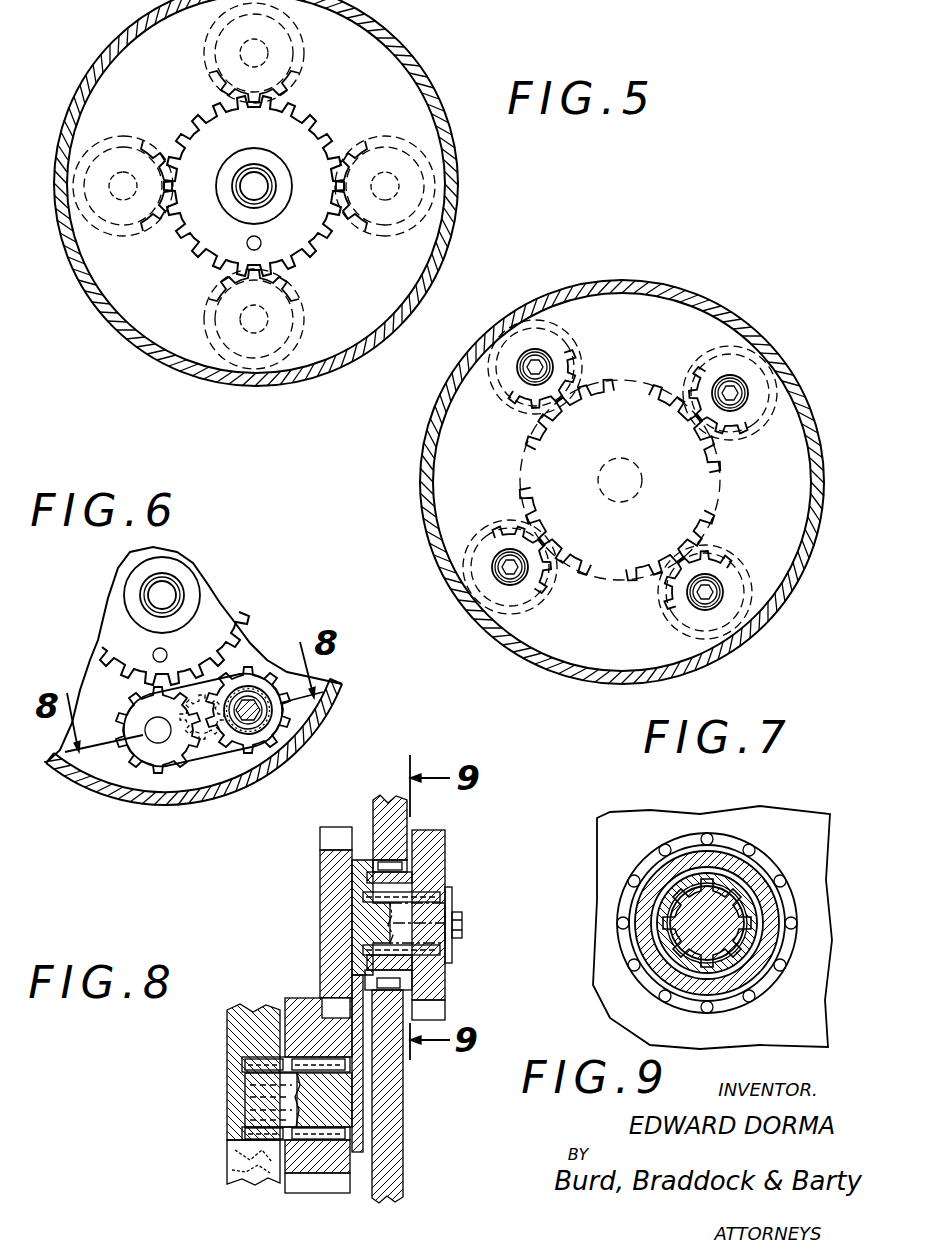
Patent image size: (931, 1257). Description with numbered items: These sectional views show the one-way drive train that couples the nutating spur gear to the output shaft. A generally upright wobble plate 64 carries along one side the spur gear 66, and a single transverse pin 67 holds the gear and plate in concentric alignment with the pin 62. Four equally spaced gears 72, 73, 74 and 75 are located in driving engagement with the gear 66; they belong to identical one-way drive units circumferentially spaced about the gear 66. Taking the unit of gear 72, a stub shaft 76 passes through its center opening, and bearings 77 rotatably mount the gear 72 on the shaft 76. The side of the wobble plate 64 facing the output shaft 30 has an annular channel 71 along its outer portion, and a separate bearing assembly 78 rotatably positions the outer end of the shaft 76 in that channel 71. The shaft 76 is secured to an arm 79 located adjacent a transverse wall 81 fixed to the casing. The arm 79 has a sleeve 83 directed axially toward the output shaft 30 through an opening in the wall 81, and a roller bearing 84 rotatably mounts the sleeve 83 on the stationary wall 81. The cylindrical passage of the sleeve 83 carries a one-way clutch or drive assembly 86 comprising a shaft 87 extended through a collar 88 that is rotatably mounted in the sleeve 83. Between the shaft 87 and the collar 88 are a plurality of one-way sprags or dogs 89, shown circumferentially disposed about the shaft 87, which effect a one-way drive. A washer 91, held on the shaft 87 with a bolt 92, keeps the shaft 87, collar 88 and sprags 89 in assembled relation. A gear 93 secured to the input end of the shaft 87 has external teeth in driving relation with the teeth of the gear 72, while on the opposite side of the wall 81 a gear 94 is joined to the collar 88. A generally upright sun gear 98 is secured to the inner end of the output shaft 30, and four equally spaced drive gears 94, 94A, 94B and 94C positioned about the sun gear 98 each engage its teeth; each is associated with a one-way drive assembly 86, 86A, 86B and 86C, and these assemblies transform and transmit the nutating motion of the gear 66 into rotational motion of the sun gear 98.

In FIG. 7, the output shaft 30 is at (640, 476).
In FIG. 5, the pin 62 is at (253, 188).
In FIG. 6, the pin 62 is at (170, 598).
In FIG. 8, the wobble plate 64 is at (230, 1160).
In FIG. 5, the spur gear 66 is at (222, 245).
In FIG. 6, the spur gear 66 is at (216, 612).
In FIG. 5, the transverse pin 67 is at (262, 240).
In FIG. 8, the annular channel 71 is at (242, 1113).
In FIG. 5, the gear 72 is at (282, 318).
In FIG. 6, the gear 72 is at (136, 764).
In FIG. 8, the gear 72 is at (307, 1027).
In FIG. 5, the gear 73 is at (398, 160).
In FIG. 5, the gear 74 is at (288, 53).
In FIG. 5, the gear 75 is at (118, 155).
In FIG. 6, the stub shaft 76 is at (135, 722).
In FIG. 8, the stub shaft 76 is at (262, 1093).
In FIG. 8, the bearings 77 is at (320, 1135).
In FIG. 8, the bearing assembly 78 is at (262, 1062).
In FIG. 6, the arm 79 is at (215, 770).
In FIG. 8, the arm 79 is at (360, 1040).
In FIG. 8, the transverse wall 81 is at (394, 1170).
In FIG. 9, the transverse wall 81 is at (790, 840).
In FIG. 6, the sleeve 83 is at (262, 700).
In FIG. 8, the sleeve 83 is at (370, 860).
In FIG. 9, the sleeve 83 is at (660, 866).
In FIG. 8, the bearing 84 is at (394, 862).
In FIG. 9, the bearing 84 is at (750, 850).
In FIG. 7, the one-way clutch or drive assembly 86 is at (725, 572).
In FIG. 8, the one-way clutch or drive assembly 86 is at (424, 963).
In FIG. 7, the one-way clutch or drive assembly 86A is at (721, 372).
In FIG. 7, the one-way clutch or drive assembly 86B is at (517, 382).
In FIG. 7, the one-way clutch or drive assembly 86C is at (525, 591).
In FIG. 6, the shaft 87 is at (273, 714).
In FIG. 8, the shaft 87 is at (377, 920).
In FIG. 9, the shaft 87 is at (684, 913).
In FIG. 6, the collar 88 is at (265, 750).
In FIG. 8, the collar 88 is at (365, 958).
In FIG. 9, the collar 88 is at (650, 918).
In FIG. 8, the one-way sprags or dogs 89 is at (423, 897).
In FIG. 9, the one-way sprags or dogs 89 is at (655, 930).
In FIG. 8, the washer 91 is at (451, 903).
In FIG. 8, the bolt 92 is at (464, 923).
In FIG. 6, the gear 93 is at (240, 668).
In FIG. 8, the gear 93 is at (328, 868).
In FIG. 7, the gear 94 is at (666, 598).
In FIG. 8, the gear 94 is at (431, 858).
In FIG. 7, the drive gear 94A is at (724, 426).
In FIG. 7, the drive gear 94B is at (565, 370).
In FIG. 7, the drive gear 94C is at (518, 532).
In FIG. 7, the sun gear 98 is at (690, 495).